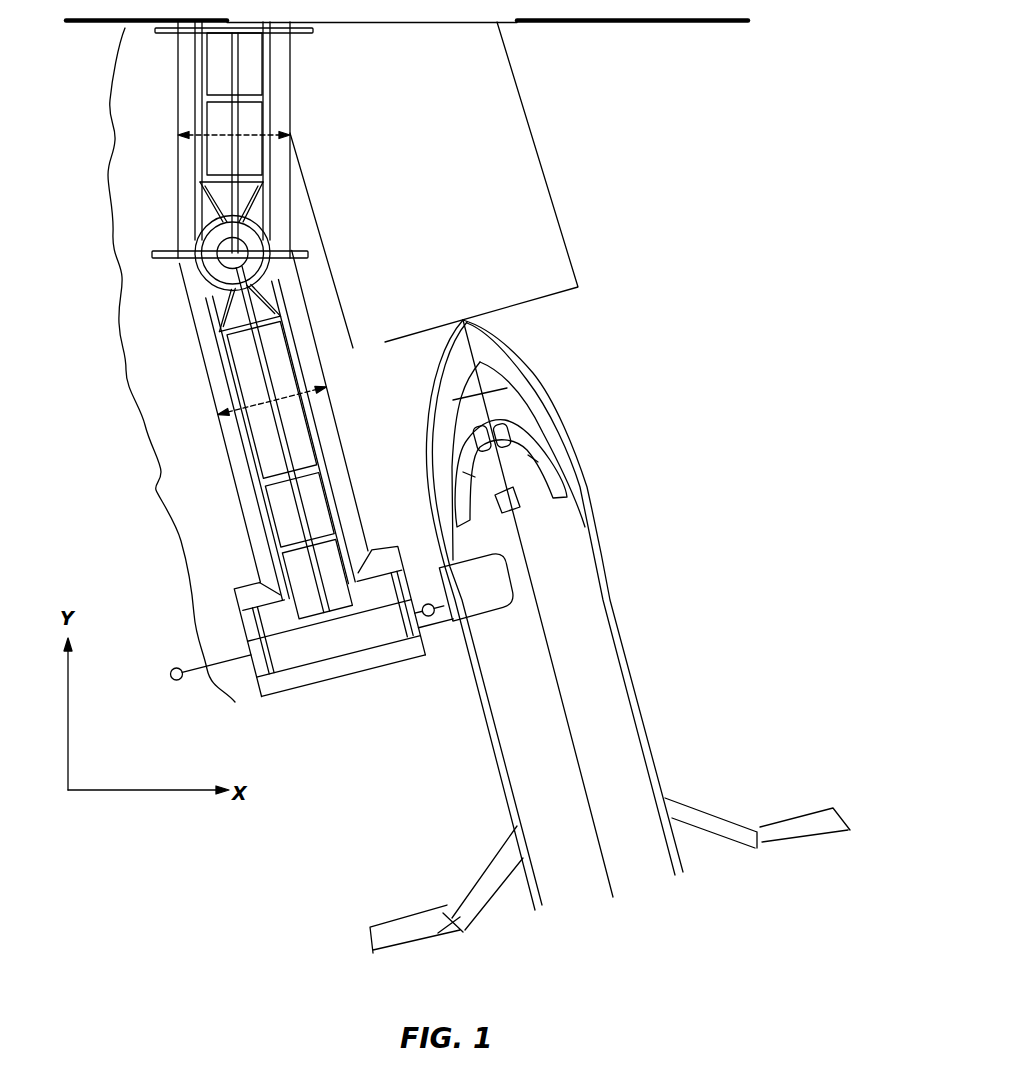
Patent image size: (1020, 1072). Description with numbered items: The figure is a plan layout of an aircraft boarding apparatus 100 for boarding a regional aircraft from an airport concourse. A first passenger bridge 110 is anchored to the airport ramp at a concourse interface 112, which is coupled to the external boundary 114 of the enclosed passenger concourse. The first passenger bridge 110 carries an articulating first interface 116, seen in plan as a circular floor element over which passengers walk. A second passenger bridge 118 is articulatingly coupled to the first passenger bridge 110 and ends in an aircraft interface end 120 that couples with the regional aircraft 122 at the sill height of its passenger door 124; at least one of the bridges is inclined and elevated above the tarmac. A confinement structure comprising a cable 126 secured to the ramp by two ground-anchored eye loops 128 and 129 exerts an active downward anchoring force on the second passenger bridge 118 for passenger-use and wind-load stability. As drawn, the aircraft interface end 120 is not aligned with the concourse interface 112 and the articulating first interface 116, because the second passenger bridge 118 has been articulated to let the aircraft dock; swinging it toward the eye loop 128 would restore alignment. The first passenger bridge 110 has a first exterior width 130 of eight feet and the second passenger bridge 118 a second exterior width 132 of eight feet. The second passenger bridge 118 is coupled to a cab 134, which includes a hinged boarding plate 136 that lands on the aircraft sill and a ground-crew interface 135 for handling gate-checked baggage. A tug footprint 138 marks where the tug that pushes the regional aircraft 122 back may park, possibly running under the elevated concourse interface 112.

The aircraft boarding apparatus 100 is at (353, 155).
The first passenger bridge 110 is at (110, 143).
The concourse interface 112 is at (313, 31).
The external boundary 114 is at (543, 23).
The articulating first interface 116 is at (277, 268).
The second passenger bridge 118 is at (171, 365).
The aircraft interface end 120 is at (345, 675).
The regional aircraft 122 is at (577, 540).
The passenger door 124 is at (493, 610).
The cable 126 is at (199, 669).
The eye loop 128 is at (168, 673).
The eye loop 129 is at (428, 598).
The first exterior width 130 is at (237, 133).
The second exterior width 132 is at (273, 400).
The cab 134 is at (360, 663).
The ground-crew interface 135 is at (255, 687).
The boarding plate 136 is at (410, 613).
The tug footprint 138 is at (547, 173).